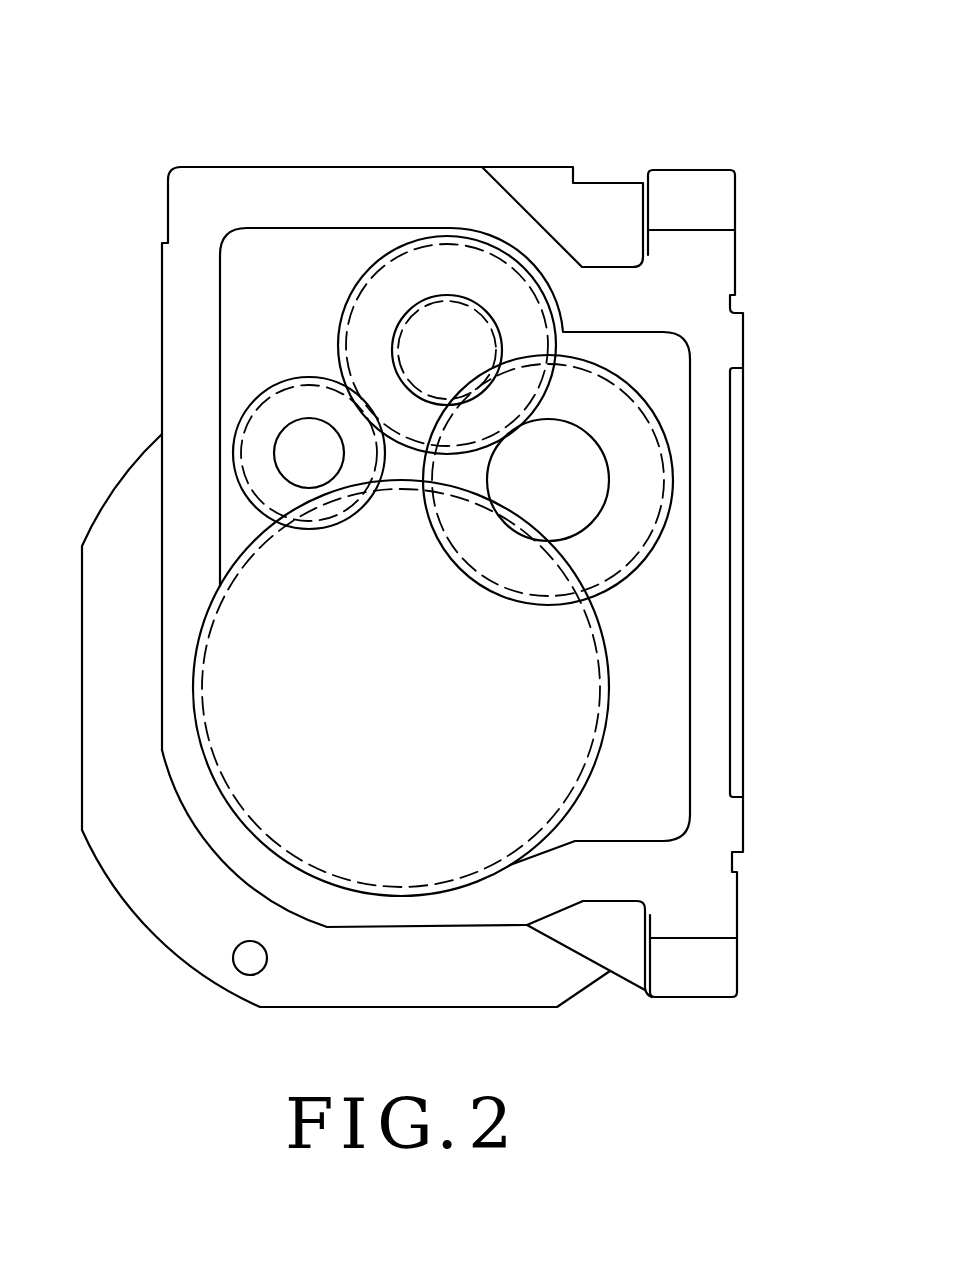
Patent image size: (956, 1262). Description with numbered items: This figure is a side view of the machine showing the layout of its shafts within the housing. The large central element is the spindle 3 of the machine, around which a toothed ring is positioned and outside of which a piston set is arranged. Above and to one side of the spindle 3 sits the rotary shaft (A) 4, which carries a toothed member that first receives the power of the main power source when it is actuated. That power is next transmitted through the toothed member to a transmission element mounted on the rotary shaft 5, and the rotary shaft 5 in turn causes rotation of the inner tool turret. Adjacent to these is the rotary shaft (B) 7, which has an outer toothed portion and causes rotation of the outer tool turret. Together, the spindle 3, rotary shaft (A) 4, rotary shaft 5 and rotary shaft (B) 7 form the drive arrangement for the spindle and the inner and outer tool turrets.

The spindle 3 is at (277, 813).
The rotary shaft (A) 4 is at (290, 432).
The rotary shaft 5 is at (441, 328).
The rotary shaft (B) 7 is at (572, 493).